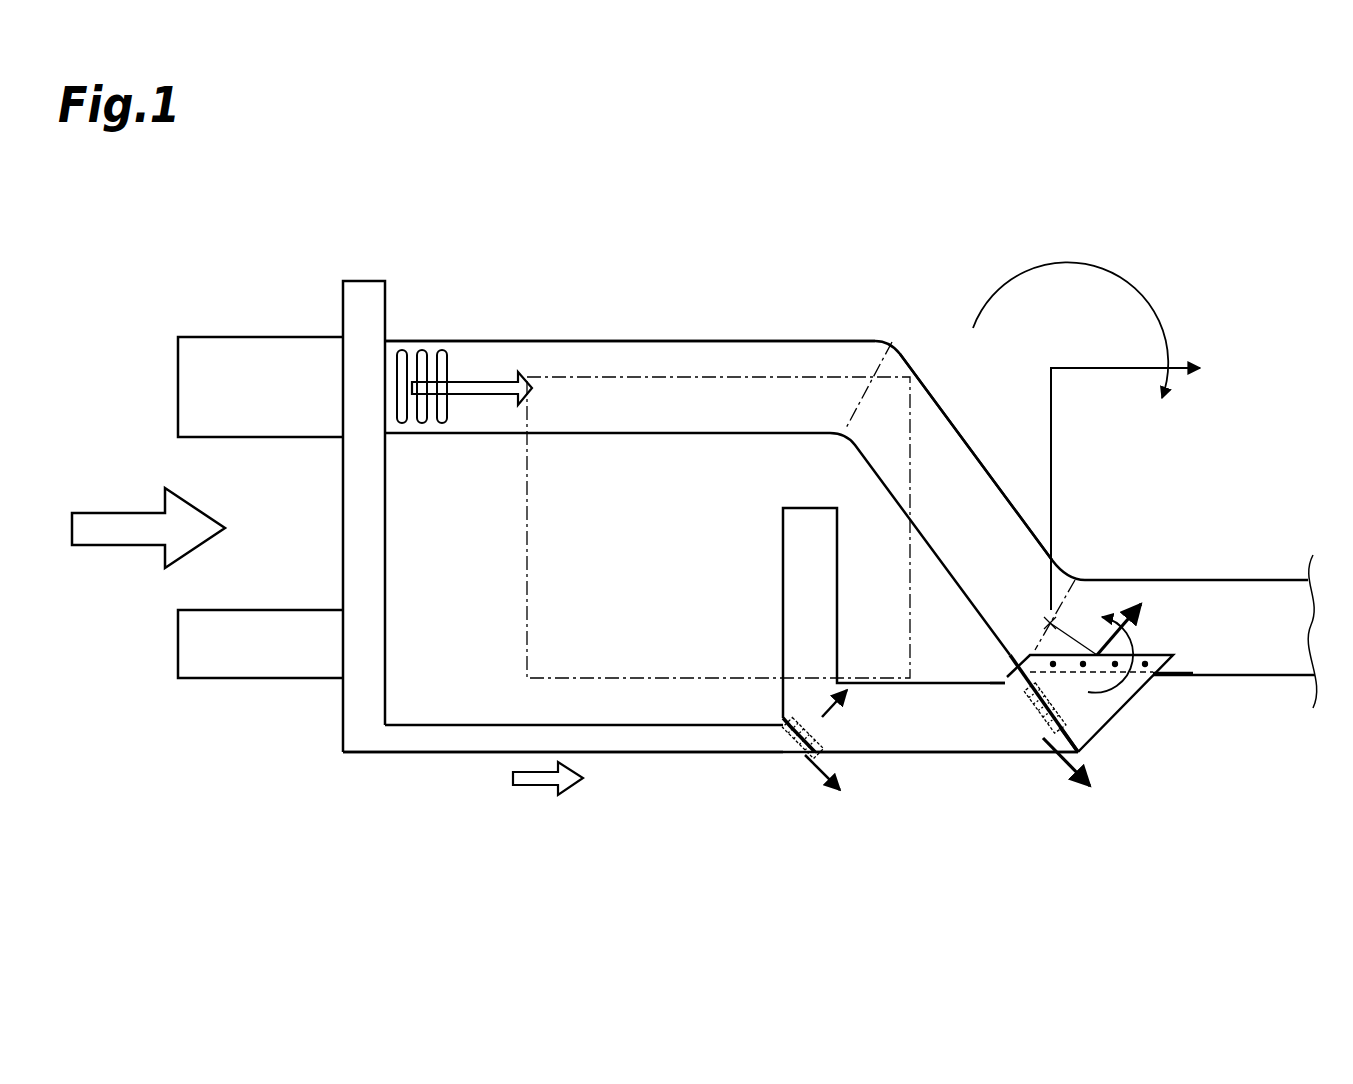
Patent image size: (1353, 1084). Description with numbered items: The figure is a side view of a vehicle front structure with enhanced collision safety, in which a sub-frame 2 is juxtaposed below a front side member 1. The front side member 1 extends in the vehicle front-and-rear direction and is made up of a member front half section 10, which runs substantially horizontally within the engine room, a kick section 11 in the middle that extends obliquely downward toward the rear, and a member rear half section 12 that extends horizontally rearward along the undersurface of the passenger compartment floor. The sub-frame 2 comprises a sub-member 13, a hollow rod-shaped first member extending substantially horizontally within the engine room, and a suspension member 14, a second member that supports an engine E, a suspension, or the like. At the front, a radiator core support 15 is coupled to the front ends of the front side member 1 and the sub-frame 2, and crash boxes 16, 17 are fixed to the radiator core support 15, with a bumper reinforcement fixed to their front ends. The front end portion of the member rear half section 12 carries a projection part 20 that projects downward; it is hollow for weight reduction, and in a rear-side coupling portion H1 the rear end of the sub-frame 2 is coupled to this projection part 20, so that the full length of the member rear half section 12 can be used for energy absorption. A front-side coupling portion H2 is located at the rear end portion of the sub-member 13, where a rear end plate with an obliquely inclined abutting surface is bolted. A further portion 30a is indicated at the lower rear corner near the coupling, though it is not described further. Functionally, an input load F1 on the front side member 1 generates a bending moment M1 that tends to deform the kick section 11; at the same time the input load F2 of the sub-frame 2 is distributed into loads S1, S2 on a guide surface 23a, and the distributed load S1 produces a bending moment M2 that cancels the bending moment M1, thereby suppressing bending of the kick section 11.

The front side member 1 is at (874, 336).
The sub-frame 2 is at (463, 765).
The member front half section 10 is at (680, 341).
The kick section 11 is at (968, 446).
The member rear half section 12 is at (1232, 580).
The sub-member 13 is at (652, 754).
The suspension member 14 is at (885, 754).
The radiator core support 15 is at (342, 310).
The crash box 16 is at (210, 337).
The crash box 17 is at (278, 610).
The projection part 20 is at (1140, 693).
The guide surface 23a is at (992, 698).
The corner portion 30a is at (1065, 733).
The engine E is at (527, 632).
The input load of the front side member F1 is at (466, 377).
The input load of the sub-frame F2 is at (531, 787).
The rear-side coupling portion H1 is at (1015, 733).
The front-side coupling portion H2 is at (780, 762).
The bending moment M1 is at (1106, 278).
The bending moment M2 is at (1140, 643).
The distributed load S1 is at (1095, 640).
The distributed load S2 is at (1062, 765).